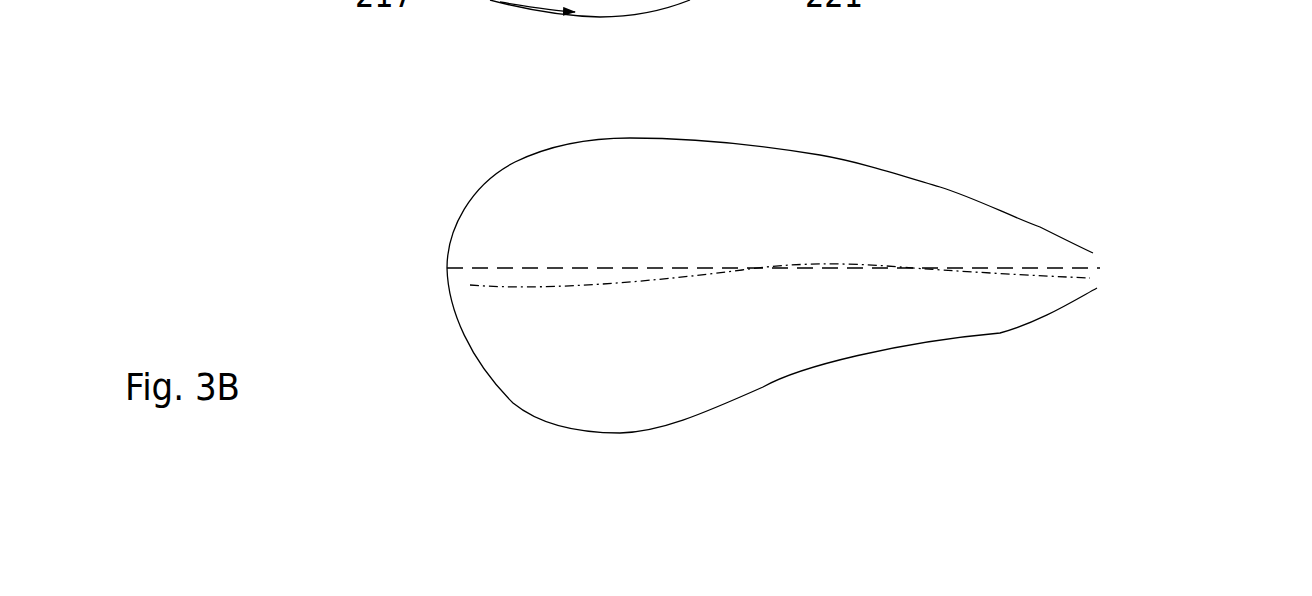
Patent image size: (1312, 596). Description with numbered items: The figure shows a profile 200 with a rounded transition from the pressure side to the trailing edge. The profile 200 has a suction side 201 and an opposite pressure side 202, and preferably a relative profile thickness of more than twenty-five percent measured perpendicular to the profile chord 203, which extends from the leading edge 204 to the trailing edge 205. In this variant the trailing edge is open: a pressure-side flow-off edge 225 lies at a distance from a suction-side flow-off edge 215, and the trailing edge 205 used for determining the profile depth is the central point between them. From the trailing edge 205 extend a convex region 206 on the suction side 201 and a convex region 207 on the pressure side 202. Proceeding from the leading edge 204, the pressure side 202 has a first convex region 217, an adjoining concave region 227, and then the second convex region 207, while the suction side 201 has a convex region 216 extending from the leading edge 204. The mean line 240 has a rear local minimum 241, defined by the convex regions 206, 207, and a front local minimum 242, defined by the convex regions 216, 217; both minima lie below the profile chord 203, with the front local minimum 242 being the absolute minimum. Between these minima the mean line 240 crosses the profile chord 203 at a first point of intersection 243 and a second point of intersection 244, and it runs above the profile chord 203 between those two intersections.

The profile 200 is at (1078, 115).
The suction side 201 is at (958, 191).
The pressure side 202 is at (937, 341).
The profile chord 203 is at (596, 268).
The leading edge 204 is at (445, 267).
The trailing edge 205 is at (1103, 268).
The convex region on the suction side 206 is at (1060, 224).
The convex region on the pressure side 207 is at (1090, 305).
The suction-side flow-off edge 215 is at (1100, 253).
The convex region on the suction side from the leading edge 216 is at (515, 163).
The first convex region 217 is at (590, 430).
The pressure-side flow-off edge 225 is at (1100, 290).
The concave region 227 is at (855, 352).
The mean line 240 is at (478, 285).
The rear local minimum 241 is at (1052, 283).
The front local minimum 242 is at (556, 290).
The first point of intersection 243 is at (742, 268).
The second point of intersection 244 is at (965, 268).